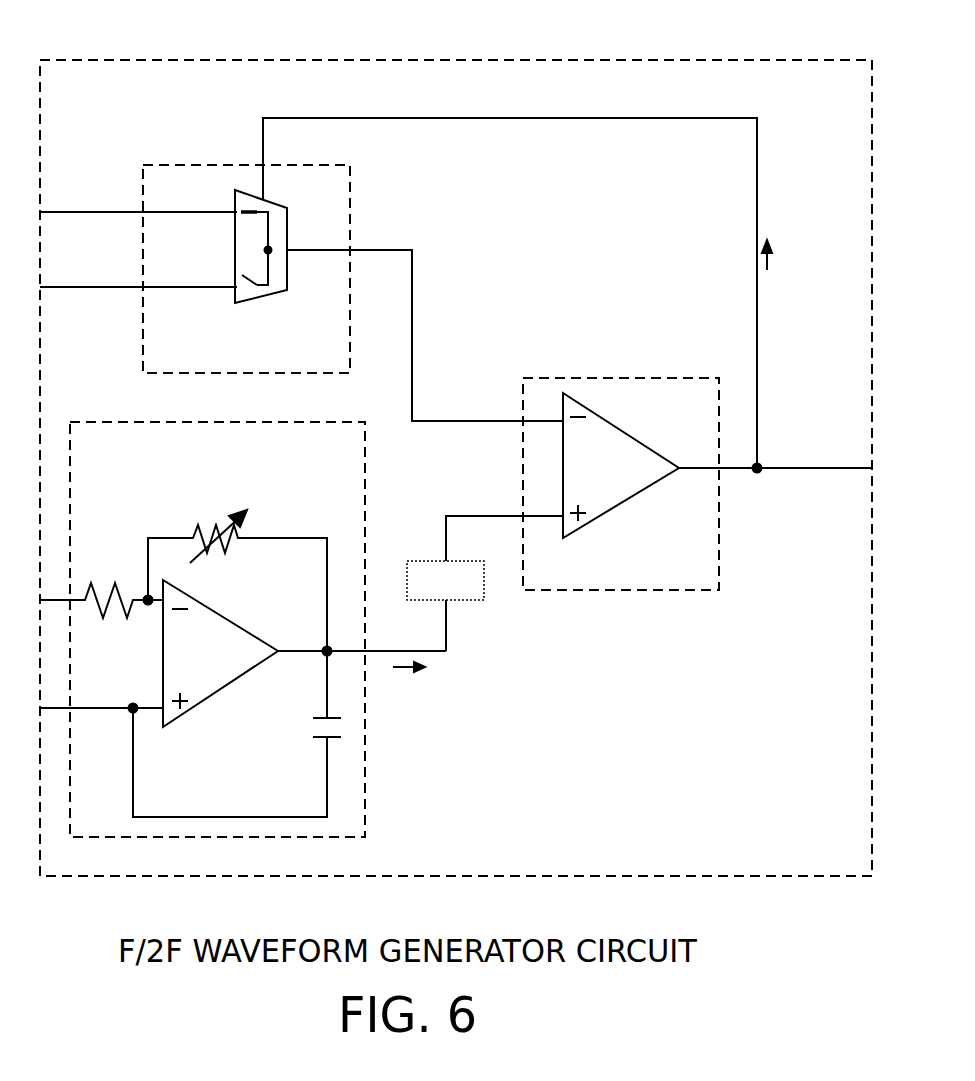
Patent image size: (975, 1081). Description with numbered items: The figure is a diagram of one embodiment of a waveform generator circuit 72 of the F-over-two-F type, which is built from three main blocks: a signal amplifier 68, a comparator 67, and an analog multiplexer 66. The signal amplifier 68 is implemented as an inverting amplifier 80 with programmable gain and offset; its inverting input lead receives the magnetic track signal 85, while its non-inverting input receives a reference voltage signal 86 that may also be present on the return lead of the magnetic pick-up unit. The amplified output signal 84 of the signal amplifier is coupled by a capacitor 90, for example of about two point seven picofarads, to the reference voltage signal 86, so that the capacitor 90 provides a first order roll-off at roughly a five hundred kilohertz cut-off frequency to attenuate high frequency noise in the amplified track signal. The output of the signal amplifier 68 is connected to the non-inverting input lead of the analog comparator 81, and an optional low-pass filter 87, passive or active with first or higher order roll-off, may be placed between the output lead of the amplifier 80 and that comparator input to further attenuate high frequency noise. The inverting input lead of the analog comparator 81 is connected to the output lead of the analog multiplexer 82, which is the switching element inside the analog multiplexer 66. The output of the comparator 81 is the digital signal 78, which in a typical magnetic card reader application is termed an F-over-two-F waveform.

The F/2F waveform generator circuit 72 is at (153, 60).
The analog multiplexer 66 is at (212, 165).
The analog multiplexer 82 is at (287, 218).
The digital signal 78 is at (767, 262).
The comparator 67 is at (620, 590).
The analog comparator 81 is at (650, 448).
The low-pass filter 87 is at (422, 560).
The signal amplifier 68 is at (367, 502).
The inverting amplifier 80 is at (245, 628).
The capacitor 90 is at (307, 723).
The magnetic track signal 85 is at (43, 597).
The reference voltage signal 86 is at (43, 705).
The output signal 84 is at (405, 673).